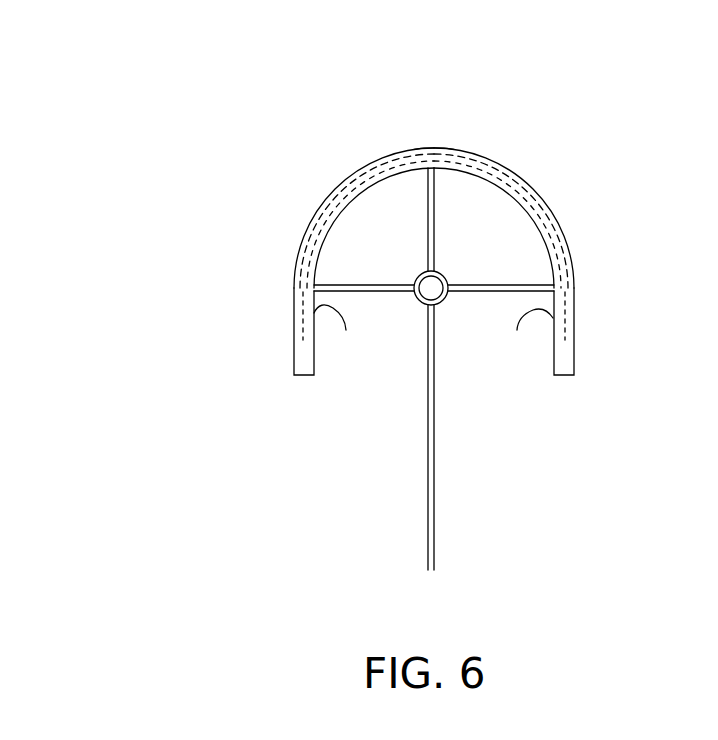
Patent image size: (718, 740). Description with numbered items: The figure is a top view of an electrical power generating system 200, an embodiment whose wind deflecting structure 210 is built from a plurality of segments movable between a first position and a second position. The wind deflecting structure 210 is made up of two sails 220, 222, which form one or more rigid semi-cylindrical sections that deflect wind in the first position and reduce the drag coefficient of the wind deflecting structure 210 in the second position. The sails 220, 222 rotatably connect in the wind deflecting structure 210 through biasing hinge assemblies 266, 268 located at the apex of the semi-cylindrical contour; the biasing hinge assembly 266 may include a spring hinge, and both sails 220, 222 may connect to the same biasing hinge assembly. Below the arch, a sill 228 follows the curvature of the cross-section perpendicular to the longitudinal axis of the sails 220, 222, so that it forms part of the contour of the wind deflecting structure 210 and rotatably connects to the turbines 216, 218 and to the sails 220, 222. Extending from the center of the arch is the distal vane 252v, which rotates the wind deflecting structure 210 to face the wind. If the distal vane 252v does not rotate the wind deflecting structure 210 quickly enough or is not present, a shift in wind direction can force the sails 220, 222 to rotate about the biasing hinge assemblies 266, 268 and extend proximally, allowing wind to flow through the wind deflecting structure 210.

The electrical power generating system 200 is at (331, 130).
The wind deflecting structure 210 is at (435, 137).
The turbine 216 is at (294, 345).
The turbine 218 is at (574, 349).
The sail 220 is at (350, 187).
The sail 222 is at (548, 205).
The sill 228 is at (568, 305).
The distal vane 252v is at (435, 516).
The biasing hinge assembly 266 is at (415, 163).
The biasing hinge assembly 268 is at (447, 163).